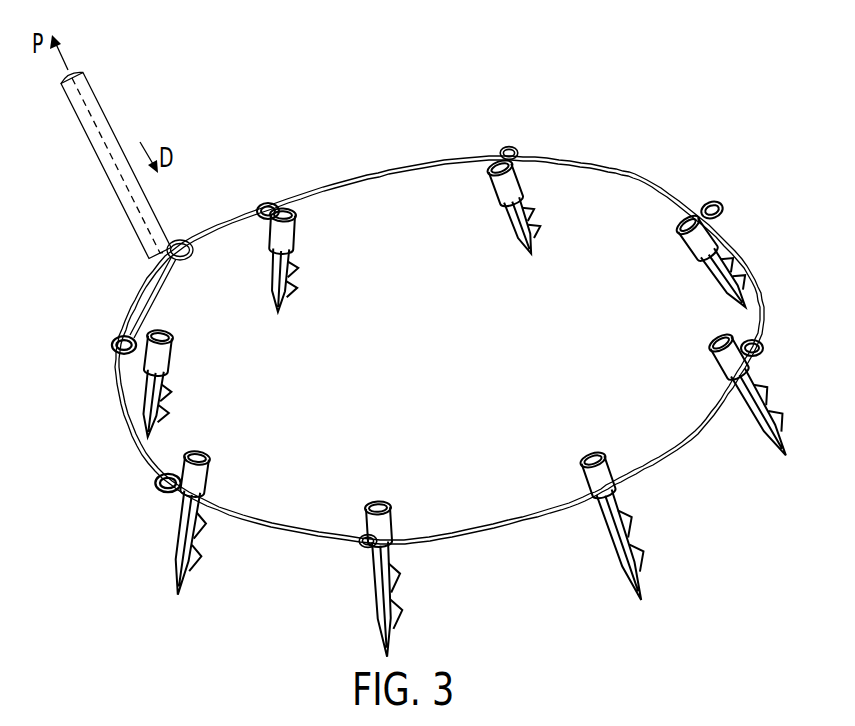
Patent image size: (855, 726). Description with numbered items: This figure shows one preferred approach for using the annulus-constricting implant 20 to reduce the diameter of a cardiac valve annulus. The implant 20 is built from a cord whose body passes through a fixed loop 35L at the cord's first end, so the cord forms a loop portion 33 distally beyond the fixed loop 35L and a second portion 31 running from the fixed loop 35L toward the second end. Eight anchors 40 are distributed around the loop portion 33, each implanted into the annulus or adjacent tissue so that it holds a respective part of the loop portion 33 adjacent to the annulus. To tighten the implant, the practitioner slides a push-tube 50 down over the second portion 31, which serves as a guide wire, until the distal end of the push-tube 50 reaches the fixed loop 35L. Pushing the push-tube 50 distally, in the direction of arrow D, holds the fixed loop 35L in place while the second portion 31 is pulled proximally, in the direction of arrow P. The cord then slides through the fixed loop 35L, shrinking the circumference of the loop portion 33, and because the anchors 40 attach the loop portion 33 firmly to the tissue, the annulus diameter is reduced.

The annulus-constricting implant 20 is at (120, 525).
The second portion 31 is at (105, 118).
The loop portion 33 is at (589, 158).
The fixed loop 35L is at (184, 240).
The anchors 40 is at (305, 325).
The push-tube 50 is at (115, 184).